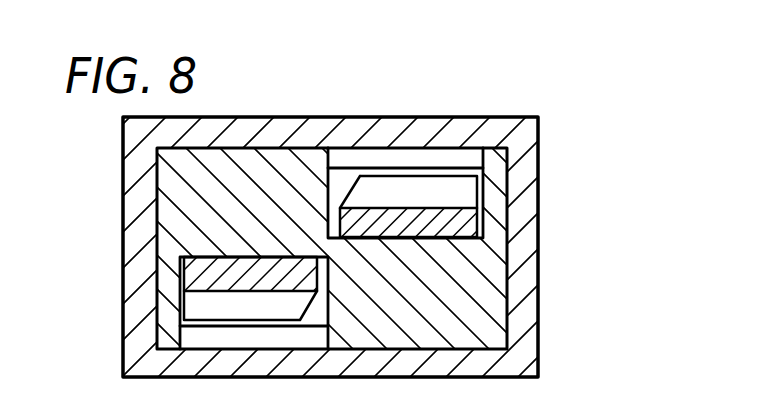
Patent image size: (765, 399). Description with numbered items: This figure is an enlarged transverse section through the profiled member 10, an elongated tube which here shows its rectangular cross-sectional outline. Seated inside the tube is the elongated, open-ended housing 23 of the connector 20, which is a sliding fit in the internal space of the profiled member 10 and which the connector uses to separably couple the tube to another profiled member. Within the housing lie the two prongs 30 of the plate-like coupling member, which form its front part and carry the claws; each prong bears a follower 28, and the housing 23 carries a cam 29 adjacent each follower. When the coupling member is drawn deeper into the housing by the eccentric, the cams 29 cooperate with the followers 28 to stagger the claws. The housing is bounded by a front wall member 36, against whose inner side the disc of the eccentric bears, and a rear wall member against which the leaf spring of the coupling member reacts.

The second profiled member 10 is at (459, 112).
The connector 20 is at (516, 327).
The housing 23 is at (465, 313).
The follower 28 is at (458, 219).
The cam 29 is at (431, 245).
The prong 30 is at (475, 168).
The front wall member 36 is at (222, 338).